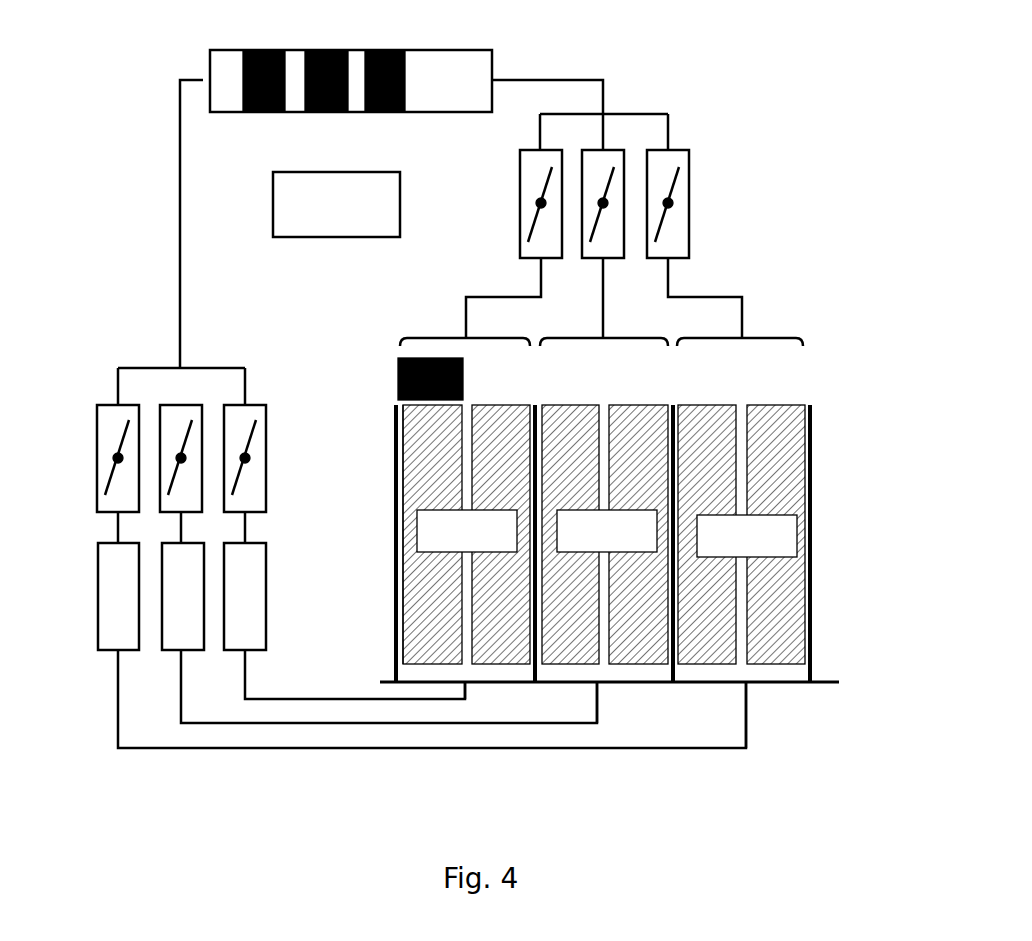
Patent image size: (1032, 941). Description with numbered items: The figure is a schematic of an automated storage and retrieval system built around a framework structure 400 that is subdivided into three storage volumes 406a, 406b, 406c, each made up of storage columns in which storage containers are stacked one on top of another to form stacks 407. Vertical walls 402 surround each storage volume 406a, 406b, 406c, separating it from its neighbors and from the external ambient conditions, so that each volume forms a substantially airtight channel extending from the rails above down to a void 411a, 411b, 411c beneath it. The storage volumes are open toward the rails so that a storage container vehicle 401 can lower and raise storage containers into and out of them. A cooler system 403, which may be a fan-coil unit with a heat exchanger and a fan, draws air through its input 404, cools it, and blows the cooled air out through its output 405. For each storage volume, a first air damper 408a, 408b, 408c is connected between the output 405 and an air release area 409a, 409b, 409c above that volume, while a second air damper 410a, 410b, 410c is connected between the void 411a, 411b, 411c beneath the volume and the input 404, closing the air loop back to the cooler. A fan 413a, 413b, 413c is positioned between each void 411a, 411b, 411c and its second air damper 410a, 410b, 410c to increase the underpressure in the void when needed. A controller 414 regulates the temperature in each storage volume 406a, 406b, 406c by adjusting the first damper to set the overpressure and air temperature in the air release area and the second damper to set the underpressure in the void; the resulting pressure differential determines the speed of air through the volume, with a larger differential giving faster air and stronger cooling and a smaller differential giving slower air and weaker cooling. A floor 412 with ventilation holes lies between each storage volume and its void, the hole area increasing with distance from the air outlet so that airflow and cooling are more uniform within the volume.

The framework structure 400 is at (573, 622).
The storage container vehicle 401 is at (393, 383).
The vertical walls 402 is at (527, 582).
The cooler system 403 is at (351, 81).
The input 404 is at (203, 77).
The output 405 is at (497, 78).
The storage volume 406a is at (466, 534).
The storage volume 406b is at (605, 534).
The storage volume 406c is at (741, 534).
The stacks 407 is at (410, 455).
The first air damper 408a is at (528, 218).
The first air damper 408b is at (618, 163).
The first air damper 408c is at (690, 203).
The air release area 409a is at (470, 315).
The air release area 409b is at (604, 315).
The air release area 409c is at (735, 315).
The second air damper 410a is at (97, 458).
The second air damper 410b is at (183, 402).
The second air damper 410c is at (260, 443).
The void 411a is at (500, 676).
The void 411b is at (647, 674).
The void 411c is at (778, 674).
The floor 412 is at (818, 665).
The fan 413a is at (97, 598).
The fan 413b is at (180, 627).
The fan 413c is at (248, 605).
The controller 414 is at (336, 204).